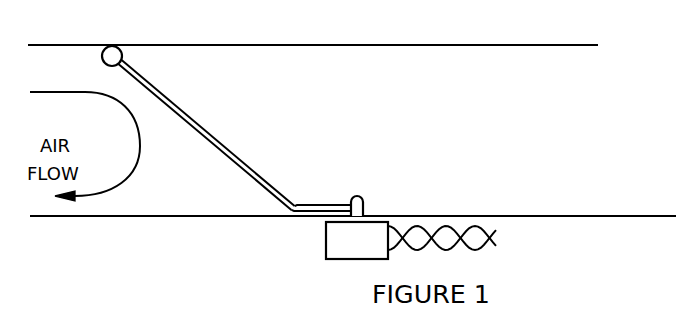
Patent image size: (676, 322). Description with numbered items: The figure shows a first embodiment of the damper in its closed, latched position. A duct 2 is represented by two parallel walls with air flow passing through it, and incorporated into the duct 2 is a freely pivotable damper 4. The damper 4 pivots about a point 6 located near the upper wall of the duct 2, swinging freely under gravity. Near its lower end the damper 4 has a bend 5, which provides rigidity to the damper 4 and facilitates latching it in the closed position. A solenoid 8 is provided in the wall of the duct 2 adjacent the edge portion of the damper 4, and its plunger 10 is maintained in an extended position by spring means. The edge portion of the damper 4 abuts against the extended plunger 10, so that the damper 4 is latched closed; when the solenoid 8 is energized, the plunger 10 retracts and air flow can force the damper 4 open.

The duct 2 is at (453, 44).
The damper 4 is at (218, 137).
The bend 5 is at (296, 205).
The pivot point 6 is at (103, 63).
The solenoid 8 is at (326, 255).
The plunger 10 is at (363, 204).